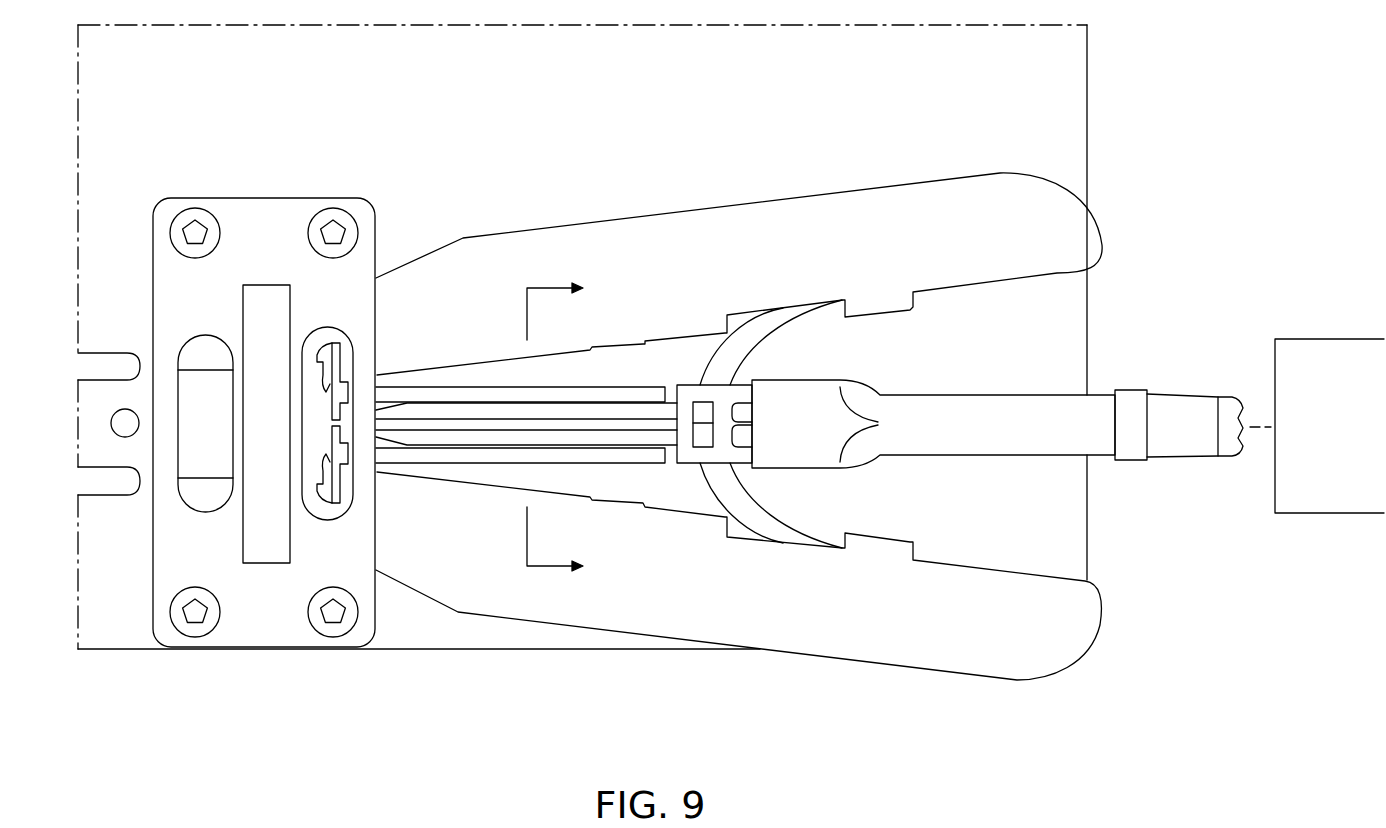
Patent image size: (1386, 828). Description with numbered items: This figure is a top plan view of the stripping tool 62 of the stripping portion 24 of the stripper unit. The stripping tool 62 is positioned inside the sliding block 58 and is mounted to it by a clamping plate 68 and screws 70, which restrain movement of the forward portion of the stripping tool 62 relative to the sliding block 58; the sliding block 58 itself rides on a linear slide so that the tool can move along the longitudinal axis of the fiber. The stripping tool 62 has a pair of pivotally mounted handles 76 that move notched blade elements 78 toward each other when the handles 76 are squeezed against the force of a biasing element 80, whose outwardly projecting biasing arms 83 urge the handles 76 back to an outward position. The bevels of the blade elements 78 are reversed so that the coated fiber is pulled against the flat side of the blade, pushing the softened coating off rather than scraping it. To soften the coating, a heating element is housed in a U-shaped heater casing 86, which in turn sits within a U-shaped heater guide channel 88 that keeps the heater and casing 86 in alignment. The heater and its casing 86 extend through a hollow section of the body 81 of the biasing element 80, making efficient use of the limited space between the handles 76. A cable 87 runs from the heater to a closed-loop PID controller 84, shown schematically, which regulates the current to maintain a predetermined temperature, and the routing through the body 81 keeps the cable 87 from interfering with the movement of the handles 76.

The stripping portion 24 is at (731, 408).
The sliding block 58 is at (402, 610).
The stripping tool 62 is at (772, 457).
The clamping plate 68 is at (300, 430).
The screws 70 is at (191, 210).
The handles 76 is at (1055, 223).
The blade elements 78 is at (342, 362).
The biasing element 80 is at (720, 393).
The body of the biasing element 81 is at (687, 455).
The biasing arms 83 is at (785, 320).
The closed-loop controller 84 is at (1300, 490).
The heater casing 86 is at (480, 412).
The cable 87 is at (1095, 440).
The heater guide channel 88 is at (417, 392).